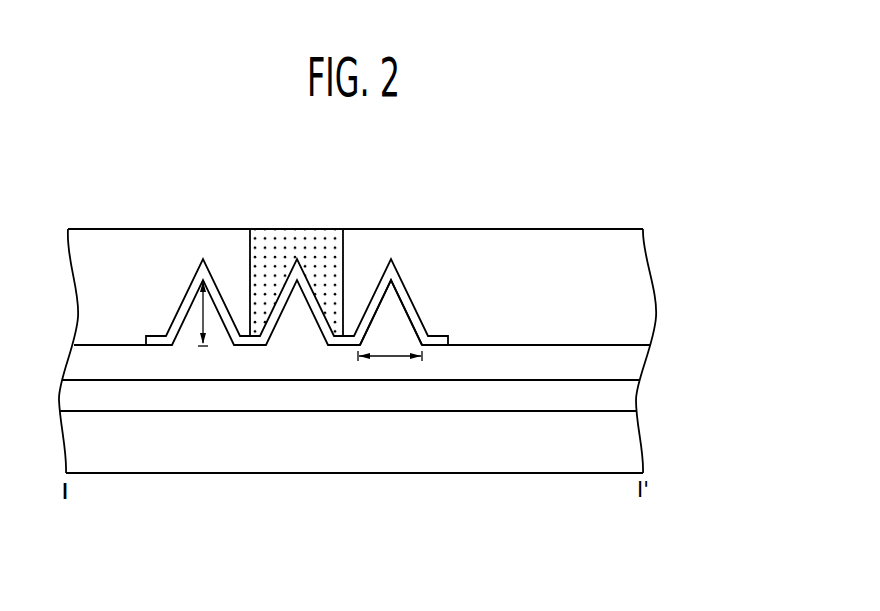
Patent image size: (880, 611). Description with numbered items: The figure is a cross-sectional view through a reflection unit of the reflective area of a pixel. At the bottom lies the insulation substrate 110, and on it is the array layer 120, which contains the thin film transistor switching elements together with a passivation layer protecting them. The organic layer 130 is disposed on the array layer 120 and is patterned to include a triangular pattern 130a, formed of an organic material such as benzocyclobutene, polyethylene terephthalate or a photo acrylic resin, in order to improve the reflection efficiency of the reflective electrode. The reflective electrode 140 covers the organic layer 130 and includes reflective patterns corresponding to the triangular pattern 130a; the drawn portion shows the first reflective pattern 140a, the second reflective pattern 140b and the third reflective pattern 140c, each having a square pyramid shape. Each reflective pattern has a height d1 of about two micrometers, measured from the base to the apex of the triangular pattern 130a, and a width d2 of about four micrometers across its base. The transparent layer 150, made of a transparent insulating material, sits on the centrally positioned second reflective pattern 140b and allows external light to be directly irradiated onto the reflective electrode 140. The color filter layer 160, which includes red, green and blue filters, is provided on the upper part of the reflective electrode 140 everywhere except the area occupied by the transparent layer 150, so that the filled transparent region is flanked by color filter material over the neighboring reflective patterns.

The insulation substrate 110 is at (637, 451).
The array layer 120 is at (633, 397).
The organic layer 130 is at (388, 282).
The triangular pattern 130a is at (386, 320).
The reflective electrode 140 is at (295, 421).
The first reflective pattern 140a is at (178, 322).
The second reflective pattern 140b is at (273, 321).
The third reflective pattern 140c is at (364, 324).
The transparent layer 150 is at (317, 242).
The color filter layer 160 is at (637, 277).
The height d1 is at (205, 311).
The width d2 is at (393, 356).